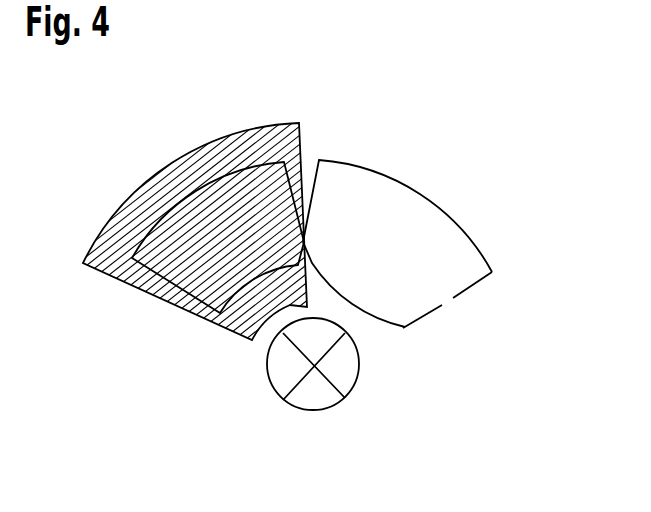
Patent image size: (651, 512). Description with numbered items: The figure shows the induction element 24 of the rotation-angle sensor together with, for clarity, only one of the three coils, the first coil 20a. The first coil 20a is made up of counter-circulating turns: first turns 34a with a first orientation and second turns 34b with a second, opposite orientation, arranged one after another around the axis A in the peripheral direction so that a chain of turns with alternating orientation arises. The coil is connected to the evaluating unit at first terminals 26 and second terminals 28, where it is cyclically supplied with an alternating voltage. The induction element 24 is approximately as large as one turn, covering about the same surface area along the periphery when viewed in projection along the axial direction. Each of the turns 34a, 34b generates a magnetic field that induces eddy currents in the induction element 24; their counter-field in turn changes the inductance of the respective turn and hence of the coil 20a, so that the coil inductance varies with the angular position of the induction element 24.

The induction element 24 is at (265, 135).
The first turns 34a is at (184, 298).
The second turns 34b is at (383, 190).
The first terminals 26 is at (453, 298).
The second terminals 28 is at (442, 305).
The first coil 20a is at (510, 184).
The axis A is at (313, 366).